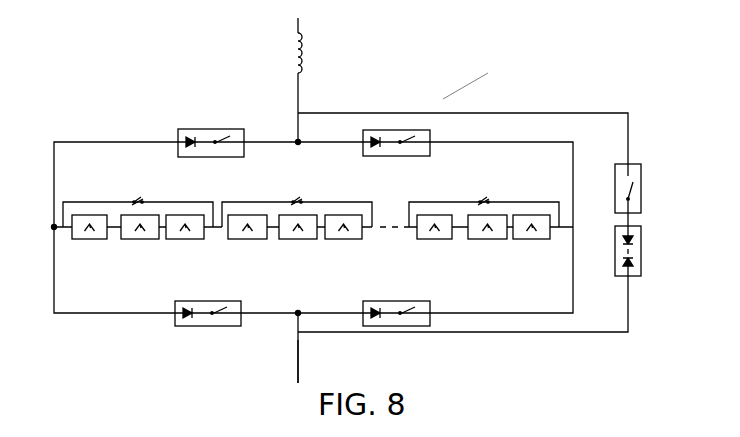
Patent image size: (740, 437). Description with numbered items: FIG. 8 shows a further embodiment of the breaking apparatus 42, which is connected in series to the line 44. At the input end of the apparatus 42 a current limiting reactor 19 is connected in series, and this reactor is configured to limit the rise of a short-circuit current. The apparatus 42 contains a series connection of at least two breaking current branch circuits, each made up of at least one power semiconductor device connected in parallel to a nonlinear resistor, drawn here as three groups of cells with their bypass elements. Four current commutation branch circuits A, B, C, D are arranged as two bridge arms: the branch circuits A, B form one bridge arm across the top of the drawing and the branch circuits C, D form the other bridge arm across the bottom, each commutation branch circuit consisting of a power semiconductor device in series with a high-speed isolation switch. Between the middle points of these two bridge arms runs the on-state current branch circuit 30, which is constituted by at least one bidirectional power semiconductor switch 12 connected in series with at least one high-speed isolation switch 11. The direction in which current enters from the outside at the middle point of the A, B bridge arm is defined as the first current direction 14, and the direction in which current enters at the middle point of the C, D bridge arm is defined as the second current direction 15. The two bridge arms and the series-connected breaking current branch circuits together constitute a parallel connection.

The line 44 is at (300, 21).
The current limiting reactor 19 is at (304, 40).
The first current direction 14 is at (300, 86).
The second current direction 15 is at (300, 360).
The apparatus 42 is at (445, 101).
The current commutation branch circuit A is at (398, 130).
The current commutation branch circuit B is at (214, 130).
The current commutation branch circuit C is at (398, 302).
The current commutation branch circuit D is at (214, 302).
The high-speed isolation switch 11 is at (614, 160).
The bidirectional power semiconductor switch 12 is at (614, 280).
The on-state current branch circuit 30 is at (643, 147).